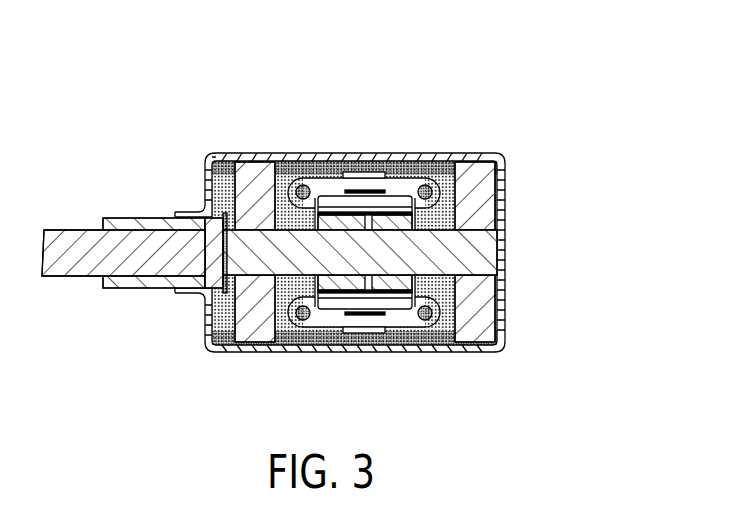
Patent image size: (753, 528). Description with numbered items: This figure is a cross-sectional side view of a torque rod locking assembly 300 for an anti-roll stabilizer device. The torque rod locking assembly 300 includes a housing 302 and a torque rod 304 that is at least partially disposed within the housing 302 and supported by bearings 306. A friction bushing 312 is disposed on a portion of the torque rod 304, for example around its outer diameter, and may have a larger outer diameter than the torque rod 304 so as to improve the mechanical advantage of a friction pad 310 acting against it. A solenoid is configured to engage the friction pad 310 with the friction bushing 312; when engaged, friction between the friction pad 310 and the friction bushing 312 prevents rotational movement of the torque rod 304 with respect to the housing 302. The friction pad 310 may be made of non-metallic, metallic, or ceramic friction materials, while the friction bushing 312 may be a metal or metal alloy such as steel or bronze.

The torque rod locking assembly 300 is at (329, 213).
The housing 302 is at (507, 320).
The torque rod 304 is at (482, 253).
The bearings 306 is at (267, 154).
The friction pad 310 is at (349, 278).
The friction bushing 312 is at (339, 223).